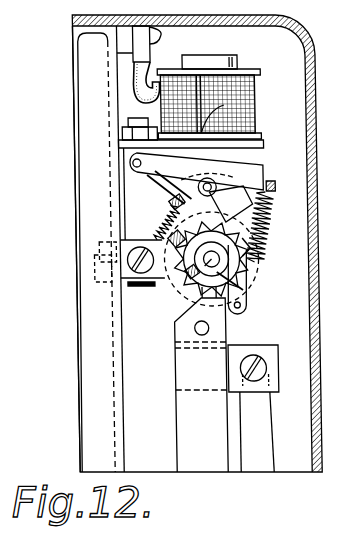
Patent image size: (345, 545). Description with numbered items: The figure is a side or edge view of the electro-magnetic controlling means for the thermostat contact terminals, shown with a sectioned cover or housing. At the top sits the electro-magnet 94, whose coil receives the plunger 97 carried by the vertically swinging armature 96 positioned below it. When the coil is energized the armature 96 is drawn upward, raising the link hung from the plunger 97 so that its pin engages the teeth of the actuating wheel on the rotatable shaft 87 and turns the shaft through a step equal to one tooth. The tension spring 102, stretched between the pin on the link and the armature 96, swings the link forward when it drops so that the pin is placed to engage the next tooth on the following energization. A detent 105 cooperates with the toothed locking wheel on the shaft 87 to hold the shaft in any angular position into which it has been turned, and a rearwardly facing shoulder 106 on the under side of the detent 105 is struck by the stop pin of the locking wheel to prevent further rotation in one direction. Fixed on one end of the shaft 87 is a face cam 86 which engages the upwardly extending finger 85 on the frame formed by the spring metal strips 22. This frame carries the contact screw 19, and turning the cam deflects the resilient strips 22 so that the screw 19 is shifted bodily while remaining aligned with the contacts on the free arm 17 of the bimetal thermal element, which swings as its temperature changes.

The electro-magnet 94 is at (254, 101).
The plunger 97 is at (258, 144).
The armature 96 is at (244, 166).
The detent 105 is at (236, 204).
The tension spring 102 is at (263, 204).
The face cam 86 is at (229, 243).
The finger 85 is at (240, 268).
The shaft 87 is at (170, 288).
The shoulder 106 is at (162, 197).
The contact screw 19 is at (244, 360).
The spring metal strip 22 is at (178, 407).
The free arm 17 is at (250, 414).